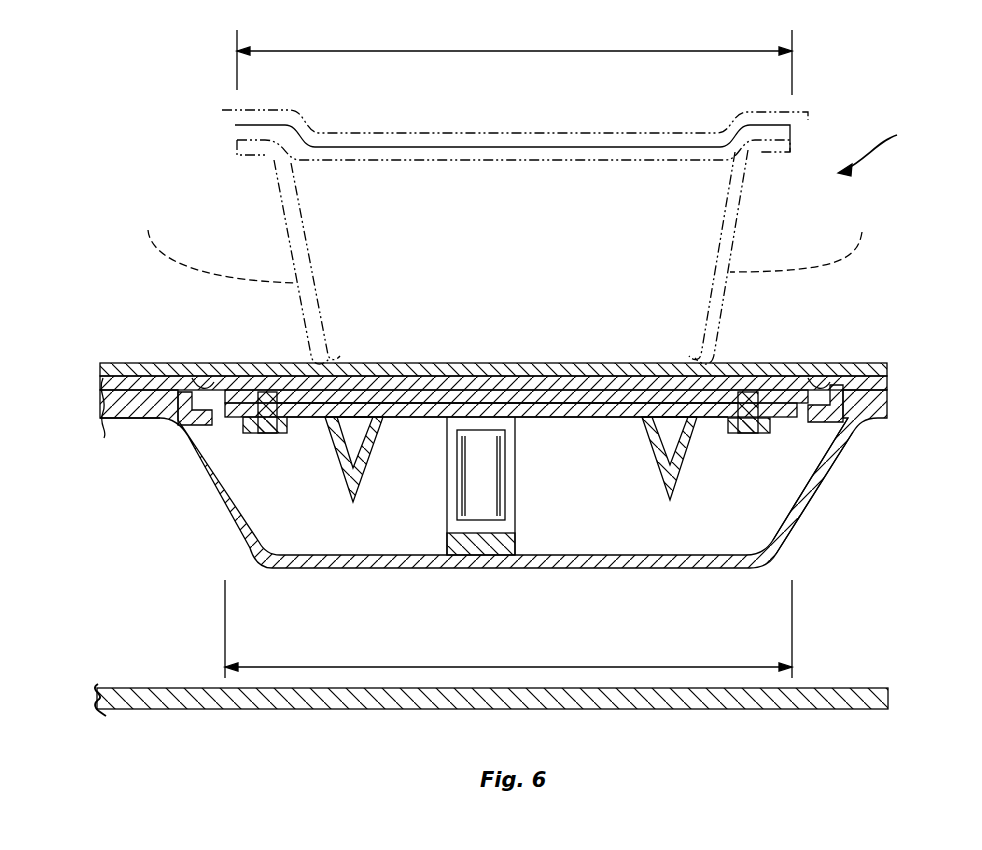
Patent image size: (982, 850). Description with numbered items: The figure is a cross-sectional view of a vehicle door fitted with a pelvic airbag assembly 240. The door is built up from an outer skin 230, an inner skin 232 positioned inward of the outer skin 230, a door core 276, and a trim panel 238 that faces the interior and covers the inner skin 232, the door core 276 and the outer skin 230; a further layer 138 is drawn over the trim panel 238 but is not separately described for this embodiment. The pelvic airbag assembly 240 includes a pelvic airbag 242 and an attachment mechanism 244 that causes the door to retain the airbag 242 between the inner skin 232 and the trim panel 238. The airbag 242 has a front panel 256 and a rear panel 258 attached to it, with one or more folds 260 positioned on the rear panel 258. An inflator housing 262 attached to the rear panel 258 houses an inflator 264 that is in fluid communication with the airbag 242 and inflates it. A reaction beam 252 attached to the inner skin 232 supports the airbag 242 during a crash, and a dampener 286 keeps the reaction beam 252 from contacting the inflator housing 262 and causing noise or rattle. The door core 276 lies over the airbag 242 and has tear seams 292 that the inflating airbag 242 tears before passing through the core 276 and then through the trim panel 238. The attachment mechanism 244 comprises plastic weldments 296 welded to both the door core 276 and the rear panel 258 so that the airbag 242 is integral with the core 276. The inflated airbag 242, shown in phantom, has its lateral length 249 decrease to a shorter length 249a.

The board 138 is at (145, 363).
The outer skin 230 is at (790, 695).
The inner skin 232 is at (103, 396).
The trim panel 238 is at (430, 386).
The pelvic airbag assembly 240 is at (160, 496).
The pelvic airbag 242 is at (308, 398).
The attachment mechanism 244 is at (240, 434).
The lateral length 249 is at (600, 667).
The inflated lateral length 249a is at (410, 52).
The reaction beam 252 is at (790, 515).
The front panel 256 is at (612, 405).
The rear panel 258 is at (580, 414).
The folds 260 is at (705, 507).
The inflator housing 262 is at (447, 505).
The inflator 264 is at (493, 470).
The door core 276 is at (525, 395).
The dampener 286 is at (482, 540).
The tear seams 292 is at (192, 363).
The weldments 296 is at (258, 363).